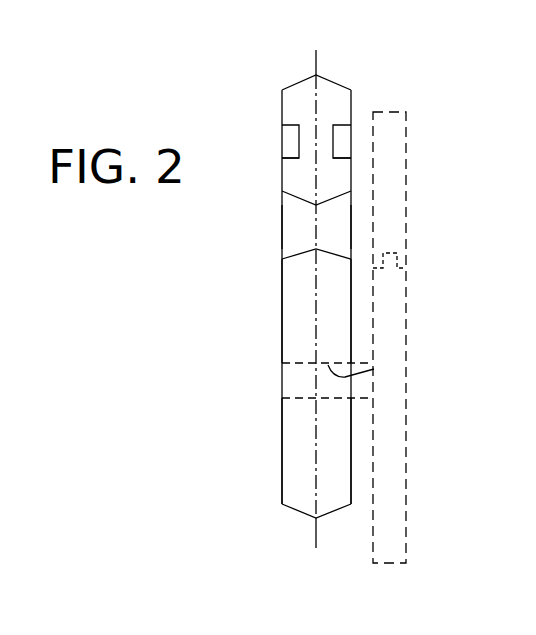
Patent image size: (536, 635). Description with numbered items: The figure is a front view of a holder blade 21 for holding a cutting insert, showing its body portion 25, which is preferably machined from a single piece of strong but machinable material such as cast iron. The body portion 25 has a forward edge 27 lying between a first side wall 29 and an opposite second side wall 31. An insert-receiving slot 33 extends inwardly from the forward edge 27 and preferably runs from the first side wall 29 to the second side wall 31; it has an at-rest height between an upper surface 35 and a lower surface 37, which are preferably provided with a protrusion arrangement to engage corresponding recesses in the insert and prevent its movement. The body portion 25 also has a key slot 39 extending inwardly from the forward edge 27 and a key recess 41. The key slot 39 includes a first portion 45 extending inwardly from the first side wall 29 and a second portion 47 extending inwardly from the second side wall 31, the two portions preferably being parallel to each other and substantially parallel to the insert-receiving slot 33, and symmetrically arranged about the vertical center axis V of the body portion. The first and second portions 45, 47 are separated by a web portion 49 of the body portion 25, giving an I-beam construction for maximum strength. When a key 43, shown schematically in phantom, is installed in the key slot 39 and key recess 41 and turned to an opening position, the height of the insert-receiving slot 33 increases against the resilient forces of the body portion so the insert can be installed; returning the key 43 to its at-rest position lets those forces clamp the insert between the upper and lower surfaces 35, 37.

The holder blade 21 is at (369, 86).
The vertical center axis V is at (316, 62).
The body portion 25 is at (280, 354).
The forward edge 27 is at (328, 300).
The first side wall 29 is at (351, 468).
The second side wall 31 is at (282, 467).
The insert-receiving slot 33 is at (292, 229).
The upper surface of the insert-receiving slot 35 is at (288, 195).
The lower surface of the insert-receiving slot 37 is at (290, 258).
The key slot 39 is at (288, 134).
The key recess 41 is at (374, 369).
The key 43 is at (406, 320).
The first portion of the key slot 45 is at (332, 150).
The second portion of the key slot 47 is at (288, 152).
The web portion 49 is at (322, 135).